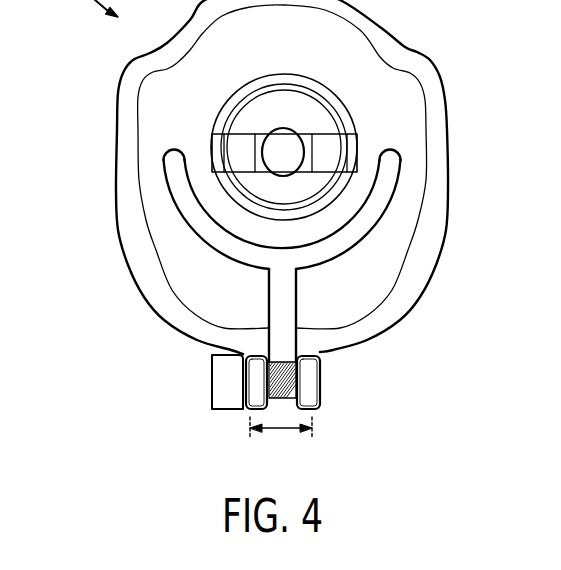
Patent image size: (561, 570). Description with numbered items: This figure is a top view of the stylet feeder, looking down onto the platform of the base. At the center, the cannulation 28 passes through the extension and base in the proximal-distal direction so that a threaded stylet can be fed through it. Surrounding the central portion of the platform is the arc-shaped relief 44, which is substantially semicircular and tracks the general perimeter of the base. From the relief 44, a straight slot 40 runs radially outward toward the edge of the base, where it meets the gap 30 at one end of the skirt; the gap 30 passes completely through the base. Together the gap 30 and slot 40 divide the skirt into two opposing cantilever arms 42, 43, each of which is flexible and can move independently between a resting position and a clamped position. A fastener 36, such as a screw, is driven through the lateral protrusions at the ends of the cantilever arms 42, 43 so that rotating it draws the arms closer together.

The cannulation 28 is at (280, 153).
The gap 30 is at (281, 441).
The fastener 36 is at (222, 383).
The slot 40 is at (277, 298).
The cantilever arm 42 is at (386, 270).
The cantilever arm 43 is at (163, 302).
The relief 44 is at (217, 235).